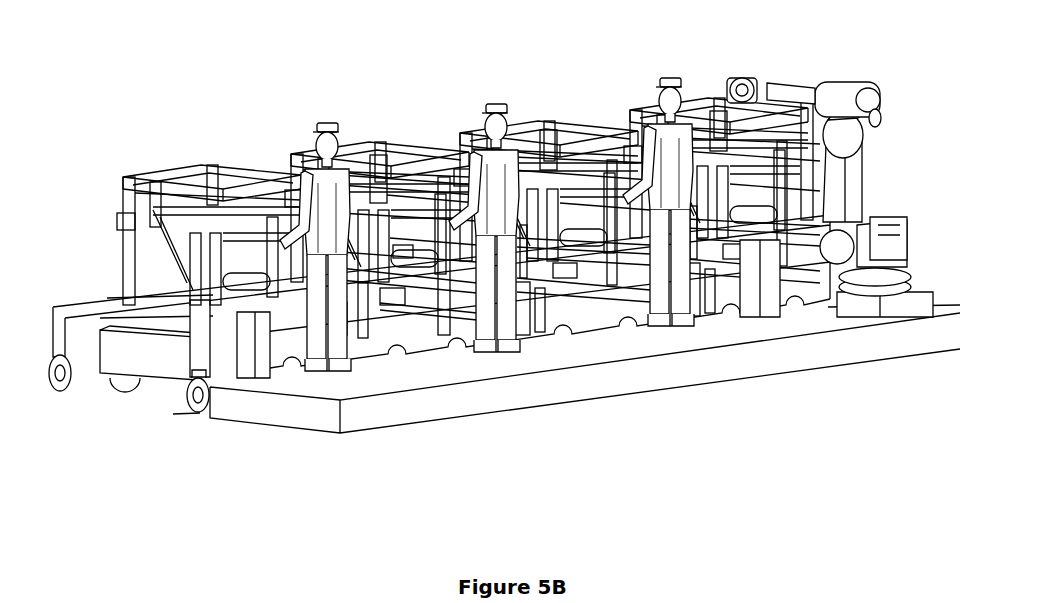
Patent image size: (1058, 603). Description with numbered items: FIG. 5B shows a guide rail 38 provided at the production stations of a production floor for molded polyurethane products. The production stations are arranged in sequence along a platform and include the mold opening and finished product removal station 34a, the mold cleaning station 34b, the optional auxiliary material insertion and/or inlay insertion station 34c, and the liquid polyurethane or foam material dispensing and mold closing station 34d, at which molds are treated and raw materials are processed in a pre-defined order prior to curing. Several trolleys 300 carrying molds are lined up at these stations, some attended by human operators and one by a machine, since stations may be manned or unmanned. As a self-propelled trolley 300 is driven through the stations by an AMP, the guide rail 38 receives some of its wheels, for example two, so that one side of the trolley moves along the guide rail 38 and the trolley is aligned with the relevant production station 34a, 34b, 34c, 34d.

The work cell cart / fixture assembly 300 is at (187, 152).
The guide rail 38 is at (173, 418).
The mold opening and finished product removal station 34a is at (365, 442).
The mold cleaning station 34b is at (505, 422).
The auxiliary material insertion and/or inlay insertion station 34c is at (637, 408).
The liquid polyurethane or foam material dispensing and mold closing station 34d is at (768, 388).